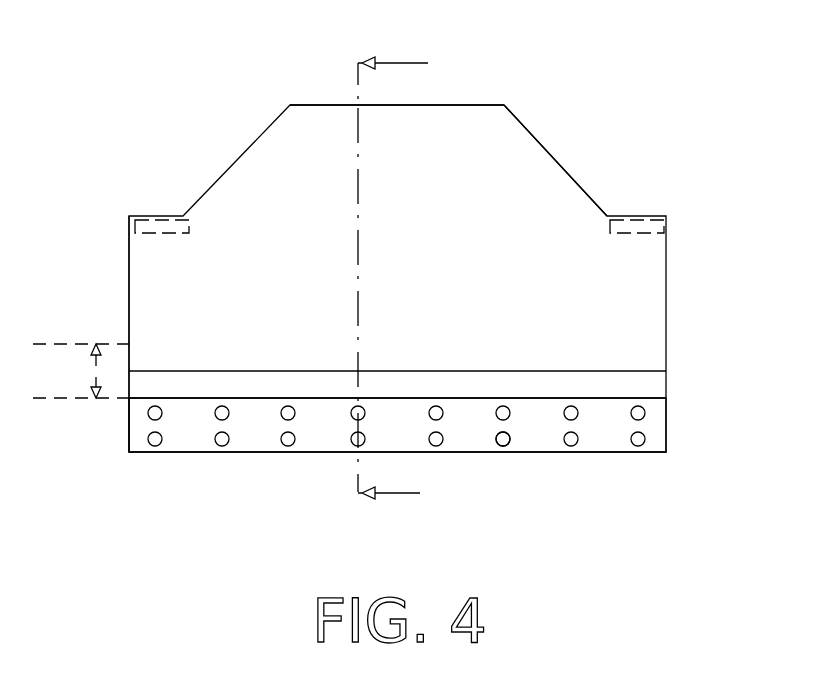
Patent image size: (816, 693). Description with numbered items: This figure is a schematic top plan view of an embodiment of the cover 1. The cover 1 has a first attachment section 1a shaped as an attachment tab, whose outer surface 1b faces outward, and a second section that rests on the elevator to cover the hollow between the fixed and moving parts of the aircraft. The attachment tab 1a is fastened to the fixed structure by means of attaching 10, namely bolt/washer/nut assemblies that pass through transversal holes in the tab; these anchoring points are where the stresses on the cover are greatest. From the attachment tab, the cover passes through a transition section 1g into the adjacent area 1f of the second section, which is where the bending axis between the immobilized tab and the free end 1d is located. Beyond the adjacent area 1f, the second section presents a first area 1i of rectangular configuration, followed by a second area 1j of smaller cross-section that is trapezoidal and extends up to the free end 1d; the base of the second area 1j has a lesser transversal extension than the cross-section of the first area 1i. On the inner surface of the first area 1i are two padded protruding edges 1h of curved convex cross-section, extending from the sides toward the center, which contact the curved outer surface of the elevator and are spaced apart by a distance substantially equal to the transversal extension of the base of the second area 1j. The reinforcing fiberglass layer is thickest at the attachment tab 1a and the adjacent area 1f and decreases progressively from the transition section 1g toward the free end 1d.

The cover 1 is at (405, 315).
The first attachment section 1a is at (666, 429).
The outer surface of the first section 1b is at (505, 427).
The free end of the second section 1d is at (443, 105).
The adjacent area of the second section to the first section 1f is at (81, 371).
The transition section 1g is at (666, 385).
The inner protruding edge 1h is at (175, 228).
The first area of the second section 1i is at (129, 291).
The second area of the second section 1j is at (560, 159).
The means of attaching the first section to the structural element 10 is at (288, 412).